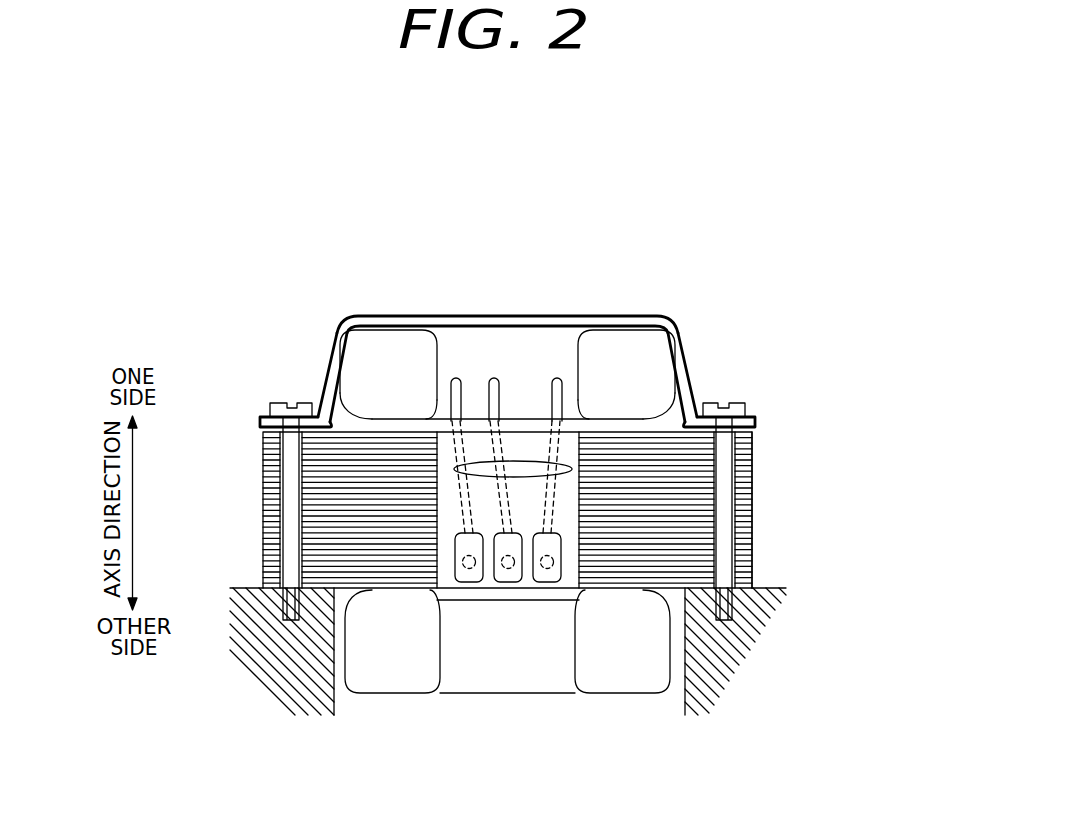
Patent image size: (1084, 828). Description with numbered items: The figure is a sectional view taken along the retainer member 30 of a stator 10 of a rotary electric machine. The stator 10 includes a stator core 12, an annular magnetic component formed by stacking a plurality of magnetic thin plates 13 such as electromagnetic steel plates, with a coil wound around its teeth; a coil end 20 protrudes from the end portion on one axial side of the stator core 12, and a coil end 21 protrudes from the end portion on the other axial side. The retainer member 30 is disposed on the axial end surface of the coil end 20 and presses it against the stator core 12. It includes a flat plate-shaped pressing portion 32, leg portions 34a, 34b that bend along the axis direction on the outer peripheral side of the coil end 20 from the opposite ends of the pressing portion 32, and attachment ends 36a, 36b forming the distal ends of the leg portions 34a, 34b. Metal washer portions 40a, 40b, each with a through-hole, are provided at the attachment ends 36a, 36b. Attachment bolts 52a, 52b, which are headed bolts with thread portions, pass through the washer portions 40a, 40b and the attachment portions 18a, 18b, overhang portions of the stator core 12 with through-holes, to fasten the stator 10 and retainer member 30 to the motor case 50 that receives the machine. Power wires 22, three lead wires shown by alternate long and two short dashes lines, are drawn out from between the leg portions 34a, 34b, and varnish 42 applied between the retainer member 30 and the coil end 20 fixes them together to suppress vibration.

The stator 10 is at (589, 288).
The stator core 12 is at (757, 545).
The magnetic thin plates 13 is at (757, 486).
The attachment portion 18a is at (263, 470).
The attachment portion 18b is at (752, 448).
The coil end 20 is at (384, 364).
The coil end 21 is at (403, 667).
The power wires 22 is at (563, 470).
The retainer member 30 is at (541, 316).
The pressing portion 32 is at (623, 327).
The leg portion 34a is at (337, 357).
The leg portion 34b is at (678, 355).
The attachment end 36a is at (262, 425).
The attachment end 36b is at (752, 422).
The washer portion 40a is at (268, 410).
The washer portion 40b is at (741, 404).
The varnish 42 is at (487, 326).
The motor case 50 is at (765, 647).
The attachment bolt 52a is at (283, 404).
The attachment bolt 52b is at (713, 404).